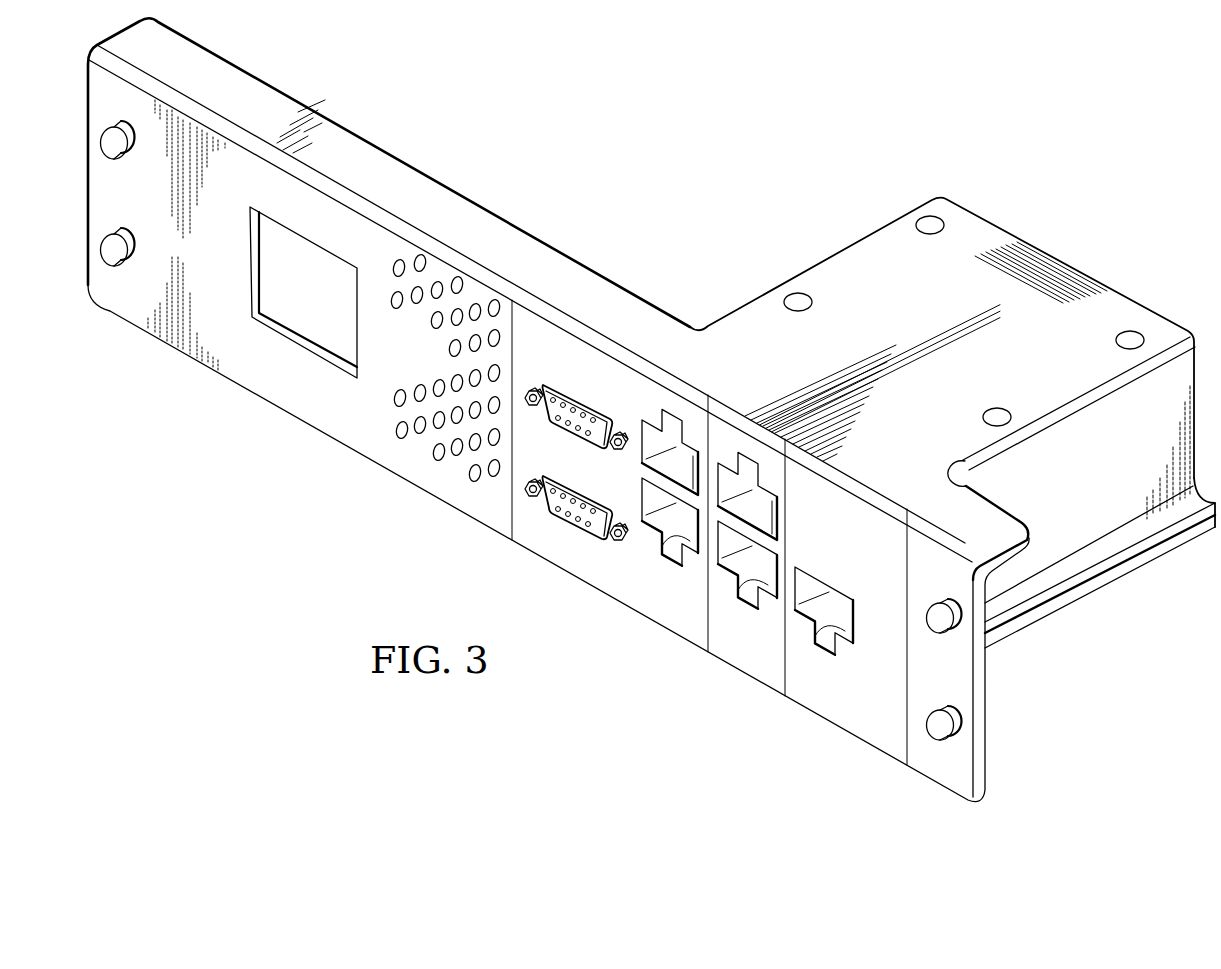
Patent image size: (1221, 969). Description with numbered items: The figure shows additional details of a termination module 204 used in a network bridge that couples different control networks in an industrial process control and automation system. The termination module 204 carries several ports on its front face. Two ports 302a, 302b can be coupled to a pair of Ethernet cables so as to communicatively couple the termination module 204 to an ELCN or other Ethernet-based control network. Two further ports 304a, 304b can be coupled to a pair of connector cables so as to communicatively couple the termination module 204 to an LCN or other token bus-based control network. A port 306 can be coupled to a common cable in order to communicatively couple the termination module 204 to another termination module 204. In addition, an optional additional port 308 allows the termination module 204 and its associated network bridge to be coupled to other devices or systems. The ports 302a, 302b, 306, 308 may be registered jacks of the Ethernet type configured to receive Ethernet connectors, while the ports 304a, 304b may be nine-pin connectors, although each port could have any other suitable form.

The termination module 204 is at (1116, 251).
The port 302a is at (698, 472).
The port 302b is at (690, 535).
The port 304a is at (577, 400).
The port 304b is at (573, 535).
The port 306 is at (832, 636).
The additional port 308 is at (755, 590).